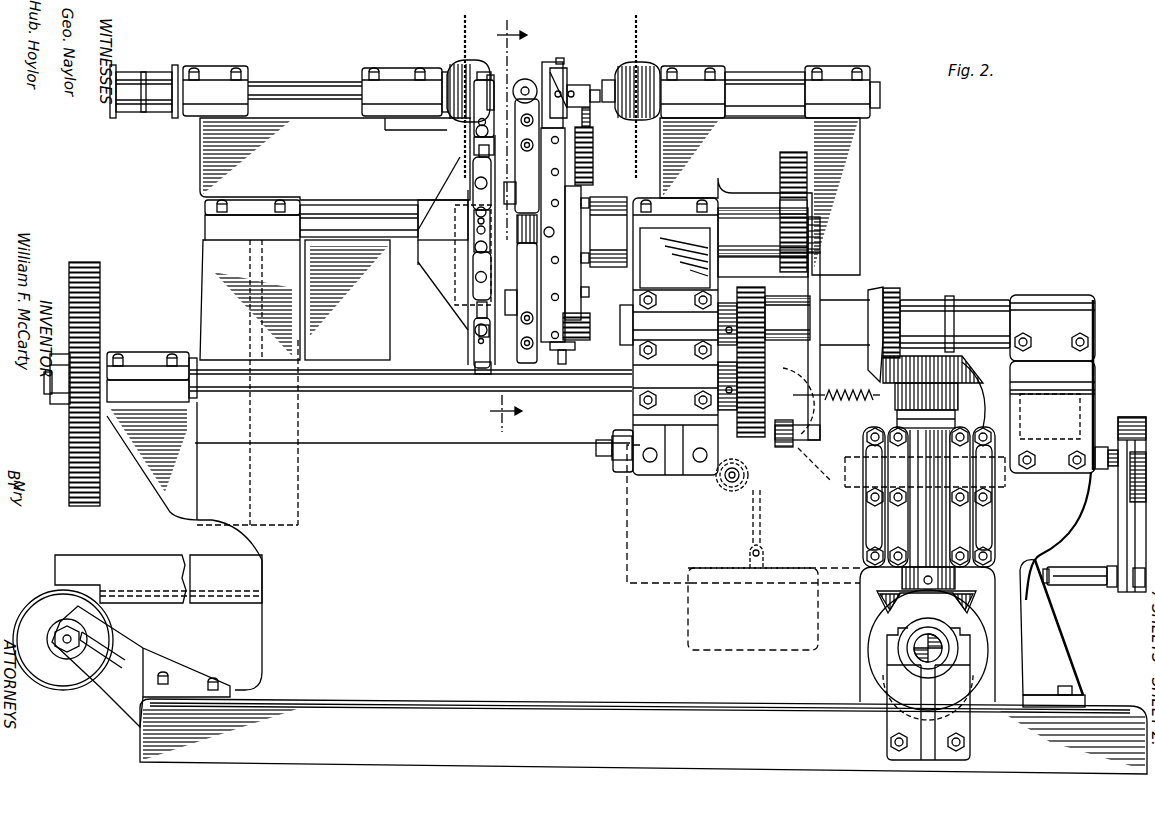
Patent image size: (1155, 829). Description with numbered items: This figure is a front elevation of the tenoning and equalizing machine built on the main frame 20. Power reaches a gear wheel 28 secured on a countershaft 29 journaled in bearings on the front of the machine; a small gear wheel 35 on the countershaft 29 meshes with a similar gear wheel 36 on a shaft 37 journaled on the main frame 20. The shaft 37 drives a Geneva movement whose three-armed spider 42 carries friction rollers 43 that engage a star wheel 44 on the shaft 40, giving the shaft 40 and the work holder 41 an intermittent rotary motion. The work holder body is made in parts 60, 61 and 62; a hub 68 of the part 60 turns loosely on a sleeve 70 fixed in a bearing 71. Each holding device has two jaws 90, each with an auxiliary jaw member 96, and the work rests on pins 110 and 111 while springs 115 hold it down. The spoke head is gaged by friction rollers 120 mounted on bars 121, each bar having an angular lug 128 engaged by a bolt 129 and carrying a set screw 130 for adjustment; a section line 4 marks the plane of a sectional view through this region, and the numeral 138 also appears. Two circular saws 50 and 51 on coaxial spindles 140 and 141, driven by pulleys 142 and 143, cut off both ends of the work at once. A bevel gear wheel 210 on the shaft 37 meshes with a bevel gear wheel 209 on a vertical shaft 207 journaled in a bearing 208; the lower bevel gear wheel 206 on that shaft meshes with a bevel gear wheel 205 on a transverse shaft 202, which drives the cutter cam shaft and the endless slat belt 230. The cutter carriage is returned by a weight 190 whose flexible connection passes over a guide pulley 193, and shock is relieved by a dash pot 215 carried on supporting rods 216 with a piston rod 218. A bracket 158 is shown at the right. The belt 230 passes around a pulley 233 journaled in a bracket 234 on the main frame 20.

The section line 4 is at (508, 219).
The main frame 20 is at (627, 557).
The gear wheel 28 is at (68, 492).
The countershaft 29 is at (438, 392).
The small gear wheel 35 is at (752, 438).
The gear wheel 36 is at (752, 290).
The shaft 37 is at (916, 306).
The shaft 40 is at (354, 216).
The work holder 41 is at (553, 81).
The three-armed spider 42 is at (818, 272).
The friction rollers 43 is at (789, 450).
The star wheel 44 is at (780, 190).
The circular saw 50 is at (462, 46).
The circular saw 51 is at (640, 50).
The body part 60 is at (563, 72).
The body part 61 is at (452, 250).
The body part 62 is at (521, 221).
The hub 68 is at (591, 306).
The sleeve 70 is at (636, 203).
The bearing 71 is at (680, 214).
The jaw 90 is at (575, 195).
The auxiliary jaw member 96 is at (608, 232).
The pin 110 is at (544, 241).
The pin 111 is at (478, 224).
The springs 115 is at (530, 172).
The friction rollers 120 is at (486, 78).
The bar 121 is at (480, 194).
The angular lug 128 is at (474, 360).
The bolt 129 is at (472, 136).
The set screw 130 is at (478, 156).
The pin 138 is at (472, 312).
The spindle 140 is at (310, 86).
The spindle 141 is at (881, 93).
The pulley 142 is at (160, 70).
The pulley 143 is at (760, 75).
The bracket 158 is at (1050, 652).
The weight 190 is at (698, 624).
The guide pulley 193 is at (720, 492).
The transverse shaft 202 is at (915, 650).
The bevel gear wheel 205 is at (880, 636).
The bevel gear wheel 206 is at (886, 602).
The shaft 207 is at (905, 572).
The bearing 208 is at (968, 538).
The bevel gear wheel 209 is at (966, 380).
The bevel gear wheel 210 is at (877, 287).
The dash pot 215 is at (1130, 425).
The supporting rods 216 is at (1086, 568).
The piston rod 218 is at (1092, 484).
The endless slat belt 230 is at (100, 580).
The pulley 233 is at (46, 612).
The bracket 234 is at (152, 662).